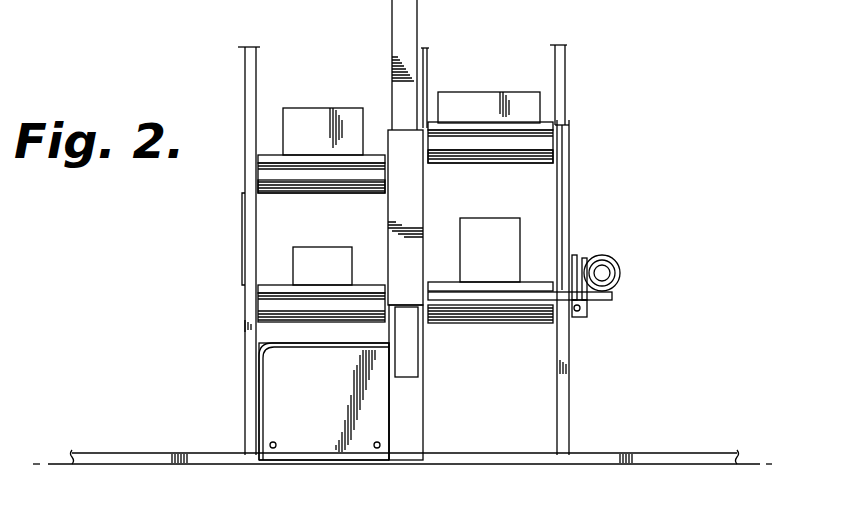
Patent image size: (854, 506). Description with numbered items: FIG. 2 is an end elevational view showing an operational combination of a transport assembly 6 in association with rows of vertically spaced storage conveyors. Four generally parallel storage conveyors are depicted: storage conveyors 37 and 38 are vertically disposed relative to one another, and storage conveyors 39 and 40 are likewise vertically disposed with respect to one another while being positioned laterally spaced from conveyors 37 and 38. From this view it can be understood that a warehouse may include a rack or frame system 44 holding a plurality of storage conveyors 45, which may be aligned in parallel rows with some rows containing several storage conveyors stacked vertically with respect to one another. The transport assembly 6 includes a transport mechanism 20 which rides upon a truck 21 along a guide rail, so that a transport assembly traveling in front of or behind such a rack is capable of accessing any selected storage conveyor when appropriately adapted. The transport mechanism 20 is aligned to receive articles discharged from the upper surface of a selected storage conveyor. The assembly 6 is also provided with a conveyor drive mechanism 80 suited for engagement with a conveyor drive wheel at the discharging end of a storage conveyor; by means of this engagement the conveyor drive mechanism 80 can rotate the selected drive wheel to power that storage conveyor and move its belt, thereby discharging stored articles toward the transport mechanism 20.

The rack or frame system 44 is at (253, 79).
The storage conveyor 40 is at (320, 155).
The storage conveyor 38 is at (488, 123).
The storage conveyor 39 is at (272, 284).
The storage conveyor 37 is at (438, 283).
The storage conveyors 45 is at (320, 193).
The conveyor drive mechanism 80 is at (605, 255).
The transport mechanism 20 is at (603, 300).
The transport assembly 6 is at (270, 399).
The truck 21 is at (273, 428).